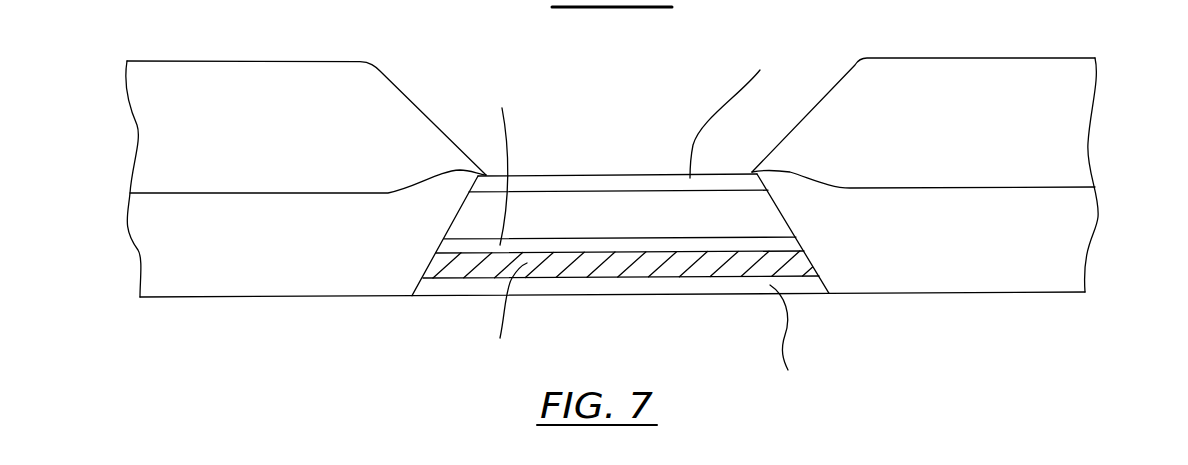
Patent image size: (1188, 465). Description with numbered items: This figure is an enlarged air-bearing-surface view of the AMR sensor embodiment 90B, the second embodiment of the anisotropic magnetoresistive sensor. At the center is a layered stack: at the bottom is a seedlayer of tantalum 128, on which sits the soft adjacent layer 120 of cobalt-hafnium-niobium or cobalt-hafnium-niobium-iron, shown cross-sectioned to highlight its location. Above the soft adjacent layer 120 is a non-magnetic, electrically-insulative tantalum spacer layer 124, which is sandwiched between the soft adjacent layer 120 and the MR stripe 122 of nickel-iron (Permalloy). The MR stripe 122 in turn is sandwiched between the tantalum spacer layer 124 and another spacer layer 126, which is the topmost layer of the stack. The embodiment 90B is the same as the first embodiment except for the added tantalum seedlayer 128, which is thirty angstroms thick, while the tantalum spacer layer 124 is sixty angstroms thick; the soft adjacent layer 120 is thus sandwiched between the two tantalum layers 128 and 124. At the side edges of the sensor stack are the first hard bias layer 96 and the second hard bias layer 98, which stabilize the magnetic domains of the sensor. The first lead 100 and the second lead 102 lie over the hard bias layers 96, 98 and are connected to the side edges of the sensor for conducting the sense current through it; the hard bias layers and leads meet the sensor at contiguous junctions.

The AMR sensor embodiment 90B is at (686, 65).
The first lead 100 is at (147, 121).
The first hard bias layer 96 is at (148, 243).
The second lead 102 is at (1072, 97).
The second hard bias layer 98 is at (1058, 244).
The spacer layer 126 is at (643, 180).
The MR stripe 122 is at (570, 200).
The tantalum spacer layer 124 is at (523, 242).
The soft adjacent layer 120 is at (672, 268).
The tantalum seedlayer 128 is at (603, 285).